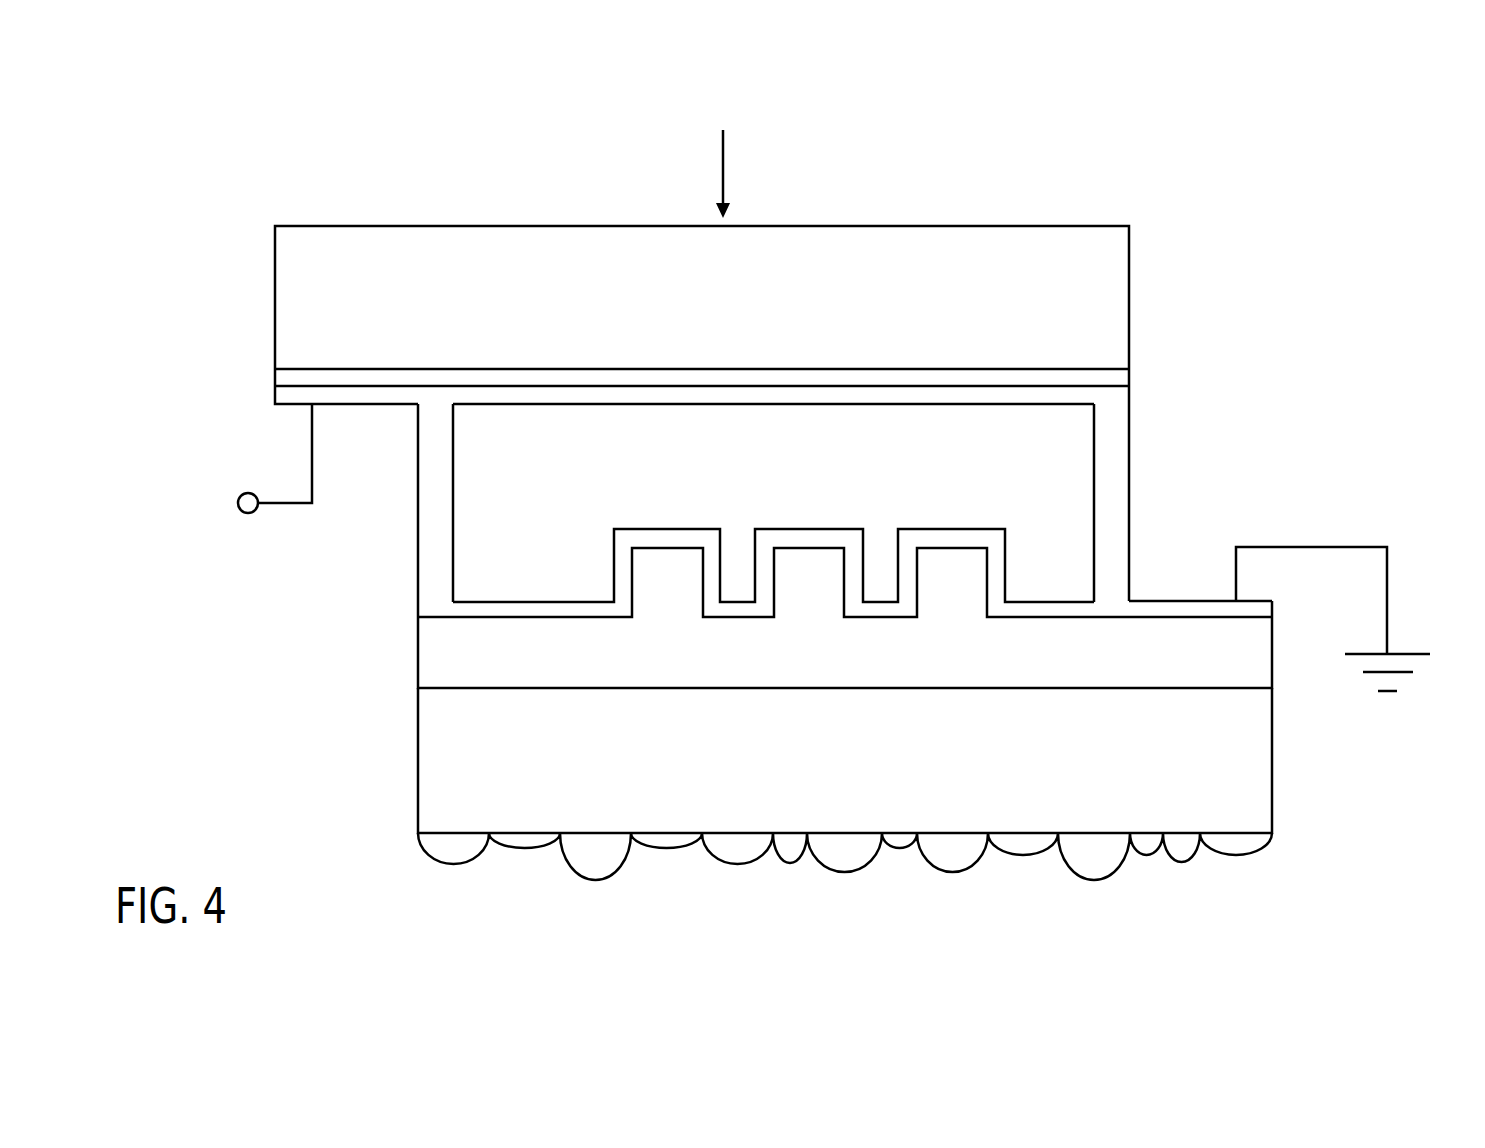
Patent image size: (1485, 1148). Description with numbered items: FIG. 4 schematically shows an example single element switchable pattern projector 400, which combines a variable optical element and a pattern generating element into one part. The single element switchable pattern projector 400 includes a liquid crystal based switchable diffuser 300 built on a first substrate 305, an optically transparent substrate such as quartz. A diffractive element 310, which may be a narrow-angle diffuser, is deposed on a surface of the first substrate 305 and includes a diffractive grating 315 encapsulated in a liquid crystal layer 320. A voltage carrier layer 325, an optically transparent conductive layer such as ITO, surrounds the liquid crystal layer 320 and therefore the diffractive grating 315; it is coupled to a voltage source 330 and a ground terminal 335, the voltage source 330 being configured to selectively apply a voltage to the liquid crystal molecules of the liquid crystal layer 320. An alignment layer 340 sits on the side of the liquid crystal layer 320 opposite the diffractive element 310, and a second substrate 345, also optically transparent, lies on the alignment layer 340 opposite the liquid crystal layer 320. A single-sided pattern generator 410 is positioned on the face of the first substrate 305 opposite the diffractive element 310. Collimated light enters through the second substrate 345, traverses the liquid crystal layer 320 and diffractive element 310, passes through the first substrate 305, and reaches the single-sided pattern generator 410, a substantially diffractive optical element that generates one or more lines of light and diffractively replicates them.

The liquid crystal based switchable diffuser 300 is at (308, 172).
The first substrate 305 is at (1258, 816).
The diffractive element 310 is at (1248, 679).
The diffractive grating 315 is at (873, 523).
The liquid crystal layer 320 is at (1061, 589).
The voltage carrier layer 325 is at (1130, 450).
The voltage source 330 is at (253, 456).
The ground terminal 335 is at (1361, 522).
The alignment layer 340 is at (1130, 380).
The second substrate 345 is at (1110, 361).
The single element switchable pattern projector 400 is at (1216, 158).
The single-sided pattern generator 410 is at (1097, 890).